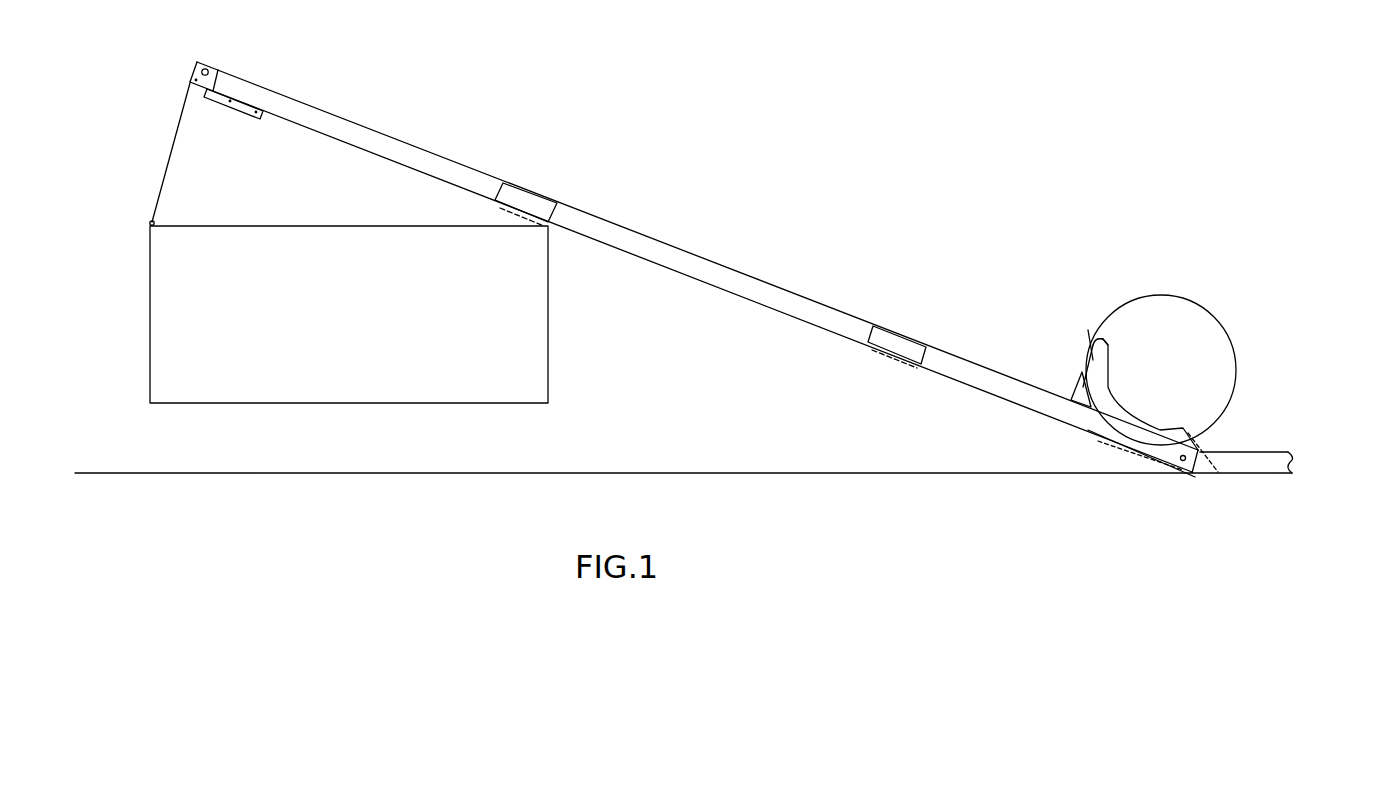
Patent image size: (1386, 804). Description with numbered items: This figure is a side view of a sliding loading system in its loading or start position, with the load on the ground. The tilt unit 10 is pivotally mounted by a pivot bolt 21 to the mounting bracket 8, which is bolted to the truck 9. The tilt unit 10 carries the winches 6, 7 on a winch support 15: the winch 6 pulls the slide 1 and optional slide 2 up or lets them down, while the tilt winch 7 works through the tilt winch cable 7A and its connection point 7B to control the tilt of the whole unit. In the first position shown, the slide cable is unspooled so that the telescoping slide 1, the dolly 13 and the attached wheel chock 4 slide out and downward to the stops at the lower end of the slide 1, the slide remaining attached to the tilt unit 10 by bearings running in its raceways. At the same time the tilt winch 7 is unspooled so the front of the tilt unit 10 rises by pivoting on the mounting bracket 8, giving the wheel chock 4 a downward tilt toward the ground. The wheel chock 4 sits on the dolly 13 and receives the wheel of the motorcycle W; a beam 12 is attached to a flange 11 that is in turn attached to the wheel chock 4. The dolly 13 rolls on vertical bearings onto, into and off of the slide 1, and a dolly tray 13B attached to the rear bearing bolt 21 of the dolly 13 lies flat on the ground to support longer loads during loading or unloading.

The slide 1 is at (668, 241).
The slide 2 is at (1024, 381).
The wheel chock 4 is at (1082, 345).
The winch 6 is at (207, 68).
The winch 7 is at (207, 68).
The tilt winch cable 7A is at (179, 138).
The connection point 7B is at (155, 221).
The mounting bracket 8 is at (546, 208).
The truck 9 is at (309, 309).
The tilt unit 10 is at (404, 140).
The flange 11 is at (1088, 360).
The beam 12 is at (1082, 377).
The dolly 13 is at (1090, 430).
The dolly tray 13B is at (1277, 452).
The winch support 15 is at (243, 100).
The pivot bolt 21 is at (1190, 476).
The motorcycle W is at (1164, 386).